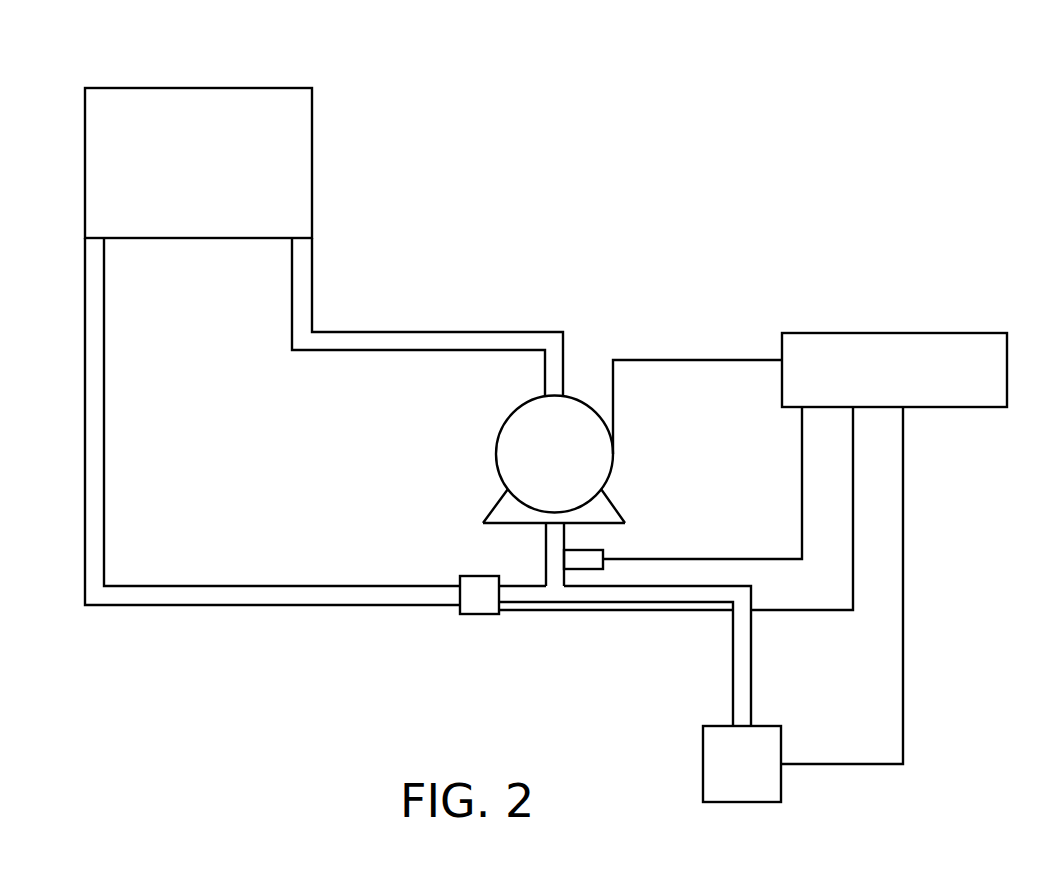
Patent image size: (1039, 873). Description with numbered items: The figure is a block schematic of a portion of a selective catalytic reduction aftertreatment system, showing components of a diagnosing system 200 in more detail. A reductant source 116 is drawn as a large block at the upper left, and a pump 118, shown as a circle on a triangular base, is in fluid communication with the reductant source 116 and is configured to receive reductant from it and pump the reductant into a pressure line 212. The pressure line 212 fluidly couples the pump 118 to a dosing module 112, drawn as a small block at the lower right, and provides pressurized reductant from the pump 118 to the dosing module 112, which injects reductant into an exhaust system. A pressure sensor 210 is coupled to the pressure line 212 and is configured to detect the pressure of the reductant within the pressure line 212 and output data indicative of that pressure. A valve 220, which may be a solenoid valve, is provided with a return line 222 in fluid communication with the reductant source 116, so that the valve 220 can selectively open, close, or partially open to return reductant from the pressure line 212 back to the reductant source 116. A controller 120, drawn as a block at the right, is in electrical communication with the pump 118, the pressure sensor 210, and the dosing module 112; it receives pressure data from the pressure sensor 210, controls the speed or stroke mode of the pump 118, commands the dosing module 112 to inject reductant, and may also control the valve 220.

The diagnosing system 200 is at (705, 249).
The reductant source 116 is at (263, 88).
The pump 118 is at (497, 450).
The controller 120 is at (873, 333).
The dosing module 112 is at (782, 750).
The pressure sensor 210 is at (603, 551).
The pressure line 212 is at (753, 598).
The valve 220 is at (480, 615).
The return line 222 is at (225, 607).